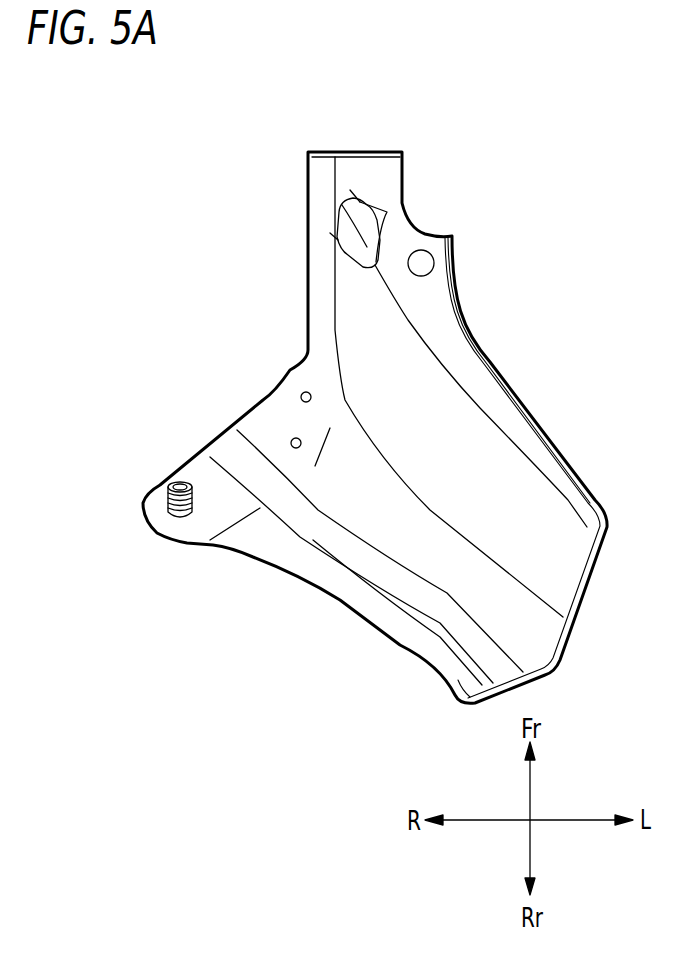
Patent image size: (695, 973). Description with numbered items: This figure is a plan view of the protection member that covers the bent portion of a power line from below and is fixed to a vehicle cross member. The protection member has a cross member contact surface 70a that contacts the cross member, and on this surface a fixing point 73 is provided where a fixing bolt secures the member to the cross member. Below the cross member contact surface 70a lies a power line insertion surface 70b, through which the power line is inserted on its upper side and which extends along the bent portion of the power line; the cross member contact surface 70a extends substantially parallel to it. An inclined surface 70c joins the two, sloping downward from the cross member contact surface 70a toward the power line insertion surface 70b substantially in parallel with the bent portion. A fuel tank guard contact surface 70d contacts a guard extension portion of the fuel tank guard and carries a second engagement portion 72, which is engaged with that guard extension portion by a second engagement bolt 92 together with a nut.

The cross member contact surface 70a is at (437, 310).
The power line insertion surface 70b is at (452, 588).
The inclined surface 70c is at (470, 448).
The fuel tank guard contact surface 70d is at (207, 520).
The second engagement portion 72 is at (163, 507).
The fixing point 73 is at (423, 259).
The second engagement bolt 92 is at (175, 477).